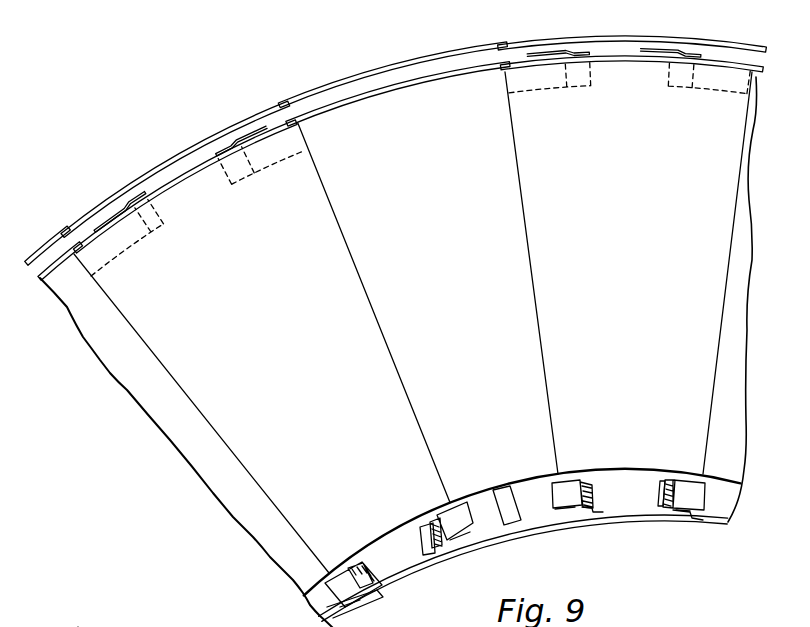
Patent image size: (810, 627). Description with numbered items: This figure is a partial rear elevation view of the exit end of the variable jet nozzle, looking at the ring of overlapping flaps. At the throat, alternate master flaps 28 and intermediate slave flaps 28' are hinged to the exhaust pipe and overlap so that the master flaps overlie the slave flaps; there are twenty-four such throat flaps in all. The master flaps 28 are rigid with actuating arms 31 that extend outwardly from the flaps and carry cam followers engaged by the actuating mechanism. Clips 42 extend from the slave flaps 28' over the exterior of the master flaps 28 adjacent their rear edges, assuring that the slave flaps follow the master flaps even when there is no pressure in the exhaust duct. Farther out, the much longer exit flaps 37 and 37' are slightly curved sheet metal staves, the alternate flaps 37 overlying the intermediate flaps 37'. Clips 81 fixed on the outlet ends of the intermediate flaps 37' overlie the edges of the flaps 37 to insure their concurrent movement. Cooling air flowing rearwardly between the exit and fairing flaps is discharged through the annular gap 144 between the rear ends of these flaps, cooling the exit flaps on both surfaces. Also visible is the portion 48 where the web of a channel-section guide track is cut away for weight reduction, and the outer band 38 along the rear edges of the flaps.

The outer rail 38 is at (38, 260).
The exit flap 37 is at (386, 335).
The intermediate exit flap 37' is at (400, 271).
The clip 81 is at (100, 238).
The annular gap 144 is at (621, 52).
The clip 42 is at (553, 492).
The actuating arm 31 is at (510, 524).
The master throat flap 28 is at (523, 568).
The slave throat flap 28' is at (535, 561).
The cut-away portion of web 48 is at (80, 626).